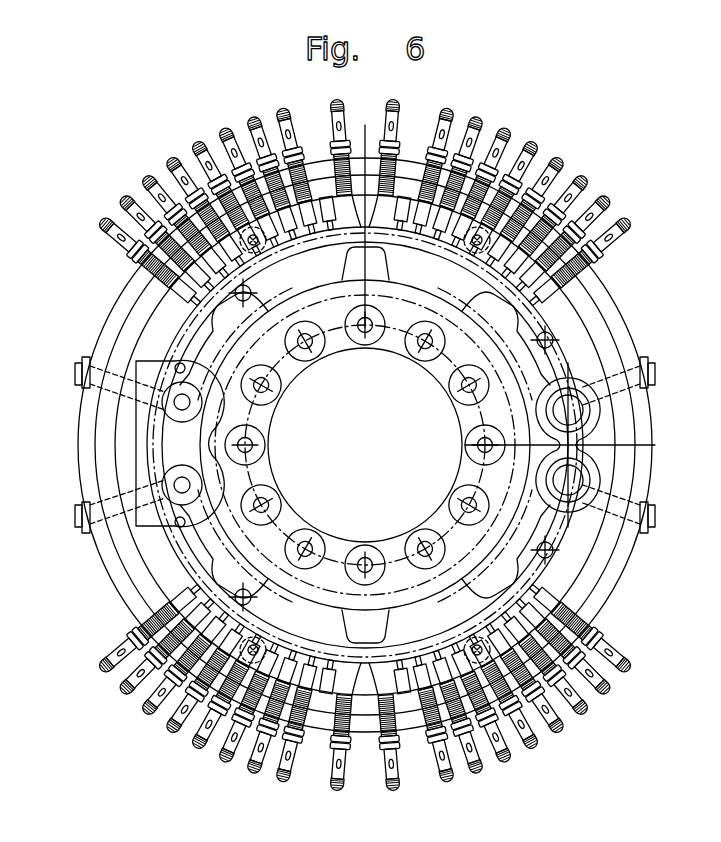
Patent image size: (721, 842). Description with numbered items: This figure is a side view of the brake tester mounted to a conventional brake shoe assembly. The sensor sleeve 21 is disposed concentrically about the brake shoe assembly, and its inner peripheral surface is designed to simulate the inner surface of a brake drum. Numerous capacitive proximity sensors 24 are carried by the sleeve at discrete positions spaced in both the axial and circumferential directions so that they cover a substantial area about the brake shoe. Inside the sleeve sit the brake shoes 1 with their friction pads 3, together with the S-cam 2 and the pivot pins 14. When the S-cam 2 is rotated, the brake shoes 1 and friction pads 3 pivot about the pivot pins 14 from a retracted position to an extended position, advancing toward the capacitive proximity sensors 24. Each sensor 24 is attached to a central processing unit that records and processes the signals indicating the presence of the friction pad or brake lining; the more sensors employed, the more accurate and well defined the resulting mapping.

The brake shoes 1 is at (291, 384).
The S-cam 2 is at (123, 445).
The friction pads 3 is at (314, 445).
The pivot pins 14 is at (588, 445).
The sensor sleeve 21 is at (351, 445).
The capacitive proximity sensors 24 is at (365, 445).